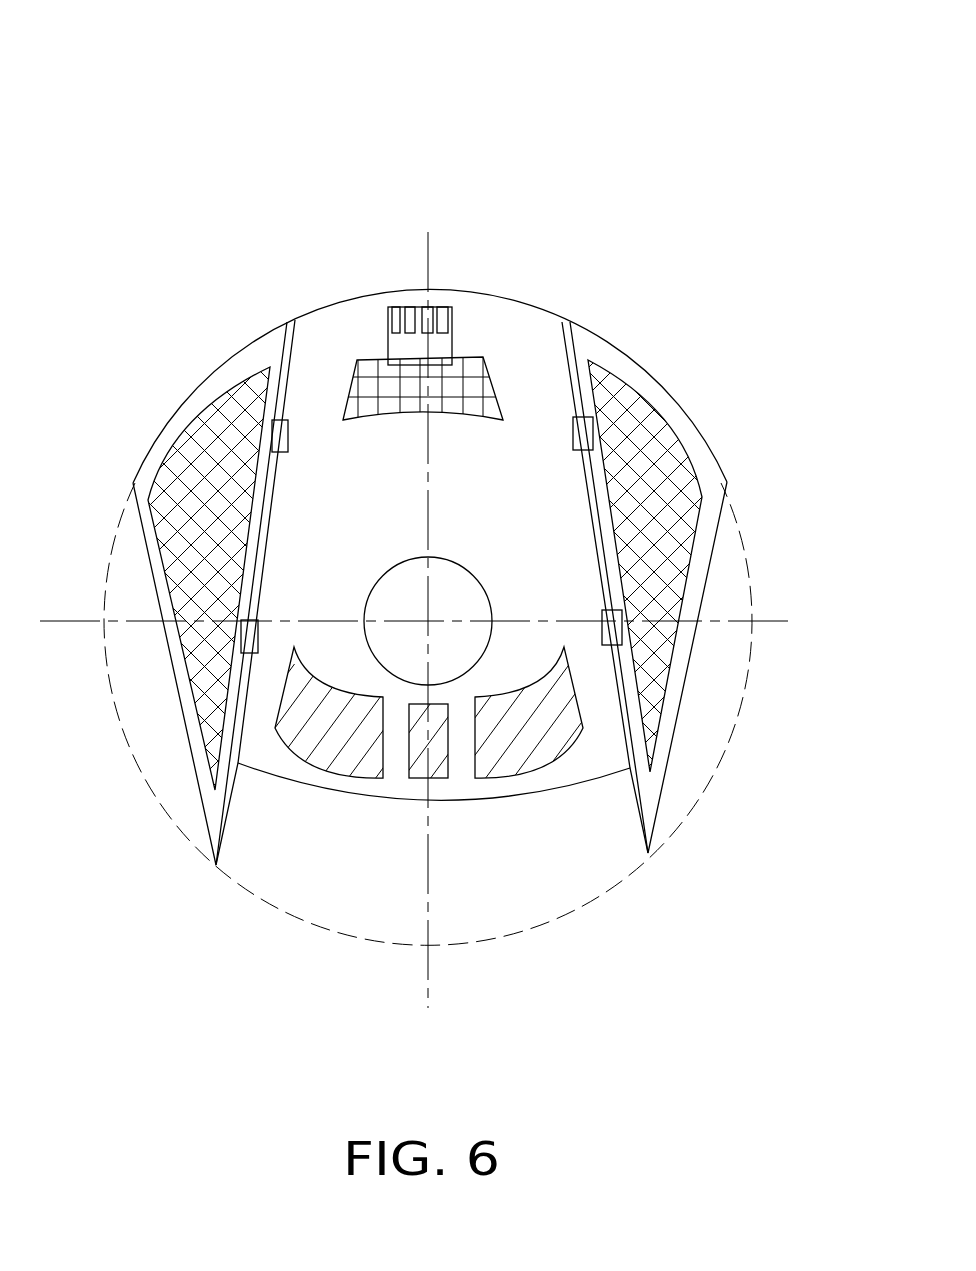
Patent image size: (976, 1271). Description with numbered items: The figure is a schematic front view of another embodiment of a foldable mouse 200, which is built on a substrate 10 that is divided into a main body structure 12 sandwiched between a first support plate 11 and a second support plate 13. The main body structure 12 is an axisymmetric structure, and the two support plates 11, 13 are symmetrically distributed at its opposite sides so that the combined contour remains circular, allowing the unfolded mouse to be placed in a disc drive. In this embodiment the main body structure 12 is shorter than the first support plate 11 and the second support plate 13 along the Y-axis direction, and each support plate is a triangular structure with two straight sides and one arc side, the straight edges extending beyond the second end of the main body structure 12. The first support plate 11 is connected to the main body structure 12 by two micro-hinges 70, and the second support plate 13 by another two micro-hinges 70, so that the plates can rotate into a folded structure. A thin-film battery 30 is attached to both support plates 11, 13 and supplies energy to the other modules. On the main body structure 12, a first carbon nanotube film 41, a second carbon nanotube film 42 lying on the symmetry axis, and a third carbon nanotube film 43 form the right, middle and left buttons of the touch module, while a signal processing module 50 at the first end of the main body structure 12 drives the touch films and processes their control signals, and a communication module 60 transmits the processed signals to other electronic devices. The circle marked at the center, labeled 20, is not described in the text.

The foldable mouse 200 is at (178, 40).
The substrate 10 is at (605, 150).
The first support plate 11 is at (257, 357).
The main body structure 12 is at (517, 330).
The second support plate 13 is at (622, 393).
The lens 20 is at (463, 595).
The thin-film battery 30 is at (202, 442).
The first carbon nanotube film 41 is at (340, 752).
The second carbon nanotube film 42 is at (422, 765).
The third carbon nanotube film 43 is at (517, 757).
The signal processing module 50 is at (372, 405).
The communication module 60 is at (413, 345).
The micro-hinge 70 is at (245, 633).